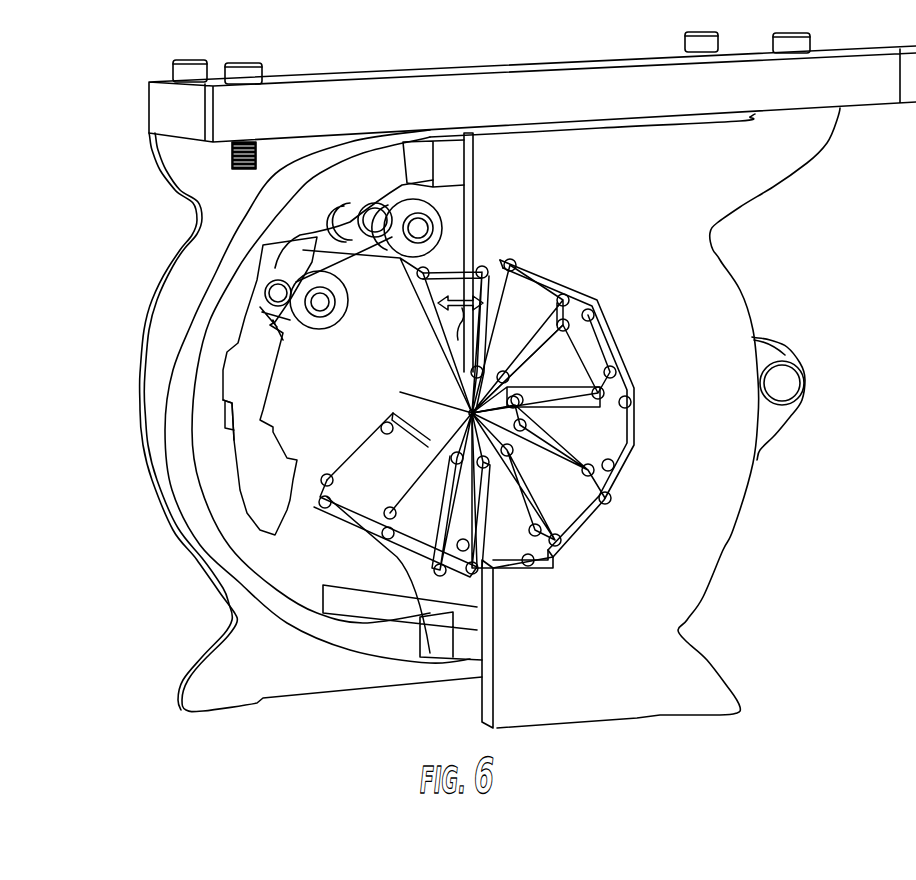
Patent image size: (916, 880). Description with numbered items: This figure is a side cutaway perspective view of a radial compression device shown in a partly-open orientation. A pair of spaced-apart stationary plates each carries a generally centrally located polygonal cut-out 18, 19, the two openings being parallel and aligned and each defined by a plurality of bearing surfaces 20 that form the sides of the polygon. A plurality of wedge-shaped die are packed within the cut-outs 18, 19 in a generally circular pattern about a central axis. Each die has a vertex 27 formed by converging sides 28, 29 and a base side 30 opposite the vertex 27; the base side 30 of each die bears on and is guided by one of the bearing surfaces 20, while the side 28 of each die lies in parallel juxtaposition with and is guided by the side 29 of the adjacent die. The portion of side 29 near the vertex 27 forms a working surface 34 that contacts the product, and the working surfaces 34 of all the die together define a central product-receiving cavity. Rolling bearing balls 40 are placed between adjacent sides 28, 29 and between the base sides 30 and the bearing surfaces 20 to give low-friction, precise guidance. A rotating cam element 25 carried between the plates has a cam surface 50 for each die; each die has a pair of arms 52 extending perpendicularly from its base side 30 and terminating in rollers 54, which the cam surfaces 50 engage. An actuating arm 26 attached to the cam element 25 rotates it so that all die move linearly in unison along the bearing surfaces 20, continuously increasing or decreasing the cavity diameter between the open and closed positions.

The cut-out 18 is at (620, 433).
The cut-out 19 is at (285, 359).
The bearing surfaces 20 is at (290, 463).
The rotating cam element 25 is at (247, 267).
The arm 26 is at (787, 378).
The vertex 27 is at (393, 413).
The side 28 is at (412, 307).
The side 29 is at (325, 497).
The base side 30 is at (532, 272).
The working surface 34 is at (444, 420).
The bearing balls 40 is at (333, 580).
The cam surface 50 is at (235, 406).
The arms 52 is at (350, 270).
The rollers 54 is at (413, 205).